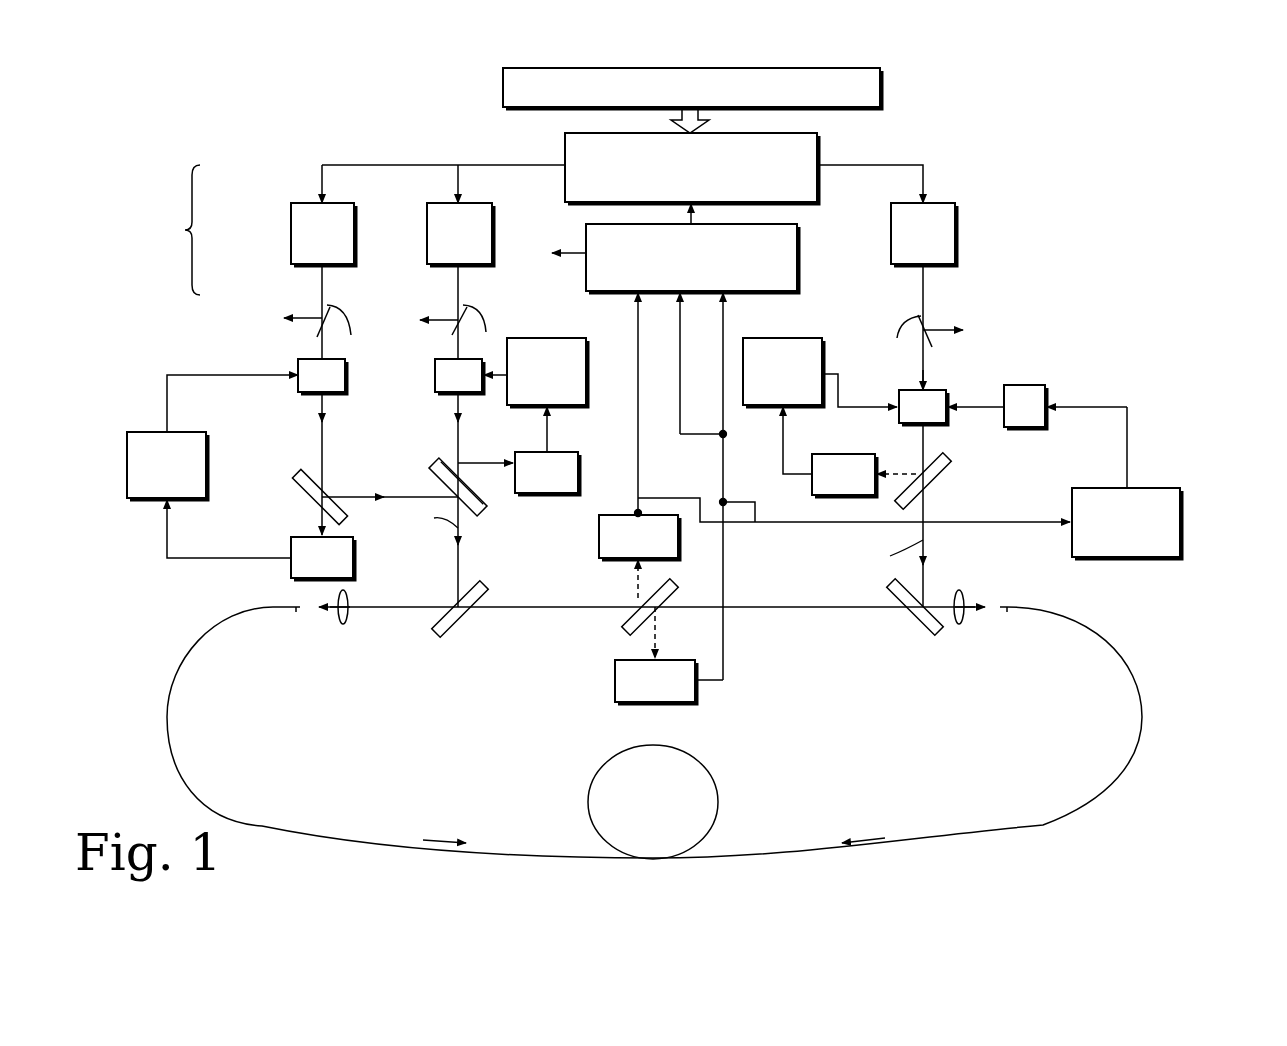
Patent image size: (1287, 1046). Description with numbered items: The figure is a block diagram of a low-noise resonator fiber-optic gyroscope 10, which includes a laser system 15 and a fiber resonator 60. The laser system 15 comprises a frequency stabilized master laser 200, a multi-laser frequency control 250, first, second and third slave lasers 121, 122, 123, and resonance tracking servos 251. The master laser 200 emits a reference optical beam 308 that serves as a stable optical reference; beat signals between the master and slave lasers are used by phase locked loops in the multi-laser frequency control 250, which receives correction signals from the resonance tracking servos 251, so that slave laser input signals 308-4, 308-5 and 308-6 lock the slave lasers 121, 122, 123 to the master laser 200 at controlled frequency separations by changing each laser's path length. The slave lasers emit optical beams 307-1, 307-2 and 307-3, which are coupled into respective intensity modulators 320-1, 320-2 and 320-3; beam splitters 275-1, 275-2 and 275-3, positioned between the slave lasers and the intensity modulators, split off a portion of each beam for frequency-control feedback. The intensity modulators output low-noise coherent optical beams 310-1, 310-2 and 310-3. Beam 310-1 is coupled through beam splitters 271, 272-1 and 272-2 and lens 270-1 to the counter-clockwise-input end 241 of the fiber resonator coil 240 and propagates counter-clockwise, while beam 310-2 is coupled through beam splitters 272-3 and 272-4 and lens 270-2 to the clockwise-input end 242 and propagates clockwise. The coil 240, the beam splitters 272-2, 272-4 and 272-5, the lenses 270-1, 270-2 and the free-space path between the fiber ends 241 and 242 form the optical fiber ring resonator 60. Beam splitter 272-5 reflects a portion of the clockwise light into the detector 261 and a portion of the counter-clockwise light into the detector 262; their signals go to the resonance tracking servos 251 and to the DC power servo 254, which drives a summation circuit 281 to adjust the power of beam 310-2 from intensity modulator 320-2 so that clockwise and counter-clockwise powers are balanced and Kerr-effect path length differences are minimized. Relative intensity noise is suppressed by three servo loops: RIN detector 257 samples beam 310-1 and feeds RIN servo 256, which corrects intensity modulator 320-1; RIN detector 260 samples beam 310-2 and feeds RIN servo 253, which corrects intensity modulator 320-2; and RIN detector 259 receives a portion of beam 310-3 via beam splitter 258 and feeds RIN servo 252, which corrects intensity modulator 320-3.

The low-noise resonator fiber-optic gyroscope 10 is at (1070, 158).
The laser system 15 is at (174, 230).
The fiber resonator 60 is at (698, 733).
The first slave laser 121 is at (291, 236).
The second slave laser 122 is at (957, 234).
The third slave laser 123 is at (427, 215).
The frequency stabilized master laser 200 is at (882, 94).
The fiber resonator coil 240 is at (718, 790).
The counter-clockwise-input end 241 is at (298, 620).
The clockwise-input end 242 is at (1007, 620).
The multi-laser frequency control 250 is at (565, 152).
The resonance tracking servos 251 is at (799, 242).
The RIN servo electronic system 252 is at (565, 338).
The RIN servo electronic system 253 is at (800, 338).
The DC power servo 254 is at (1145, 488).
The RIN servo electronic system 256 is at (145, 432).
The RIN detector 257 is at (355, 560).
The beam splitter 258 is at (468, 480).
The RIN detector 259 is at (545, 495).
The RIN detector 260 is at (812, 482).
The detector 261 is at (620, 515).
The detector 262 is at (615, 681).
The coupling lens 270-1 is at (345, 622).
The coupling lens 270-2 is at (960, 590).
The beam splitter 271 is at (310, 510).
The beam splitter 272-1 is at (433, 468).
The beam splitter 272-2 is at (445, 640).
The beam splitter 272-3 is at (938, 470).
The beam splitter 272-4 is at (918, 626).
The beam splitter 272-5 is at (622, 622).
The beam splitter 275-1 is at (306, 328).
The beam splitter 275-2 is at (948, 338).
The beam splitter 275-3 is at (442, 326).
The summation circuit 281 is at (1045, 390).
The first-frequency-modulated optical beam 307-1 is at (322, 285).
The second-frequency-modulated optical beam 307-2 is at (923, 296).
The third-frequency-modulated optical beam 307-3 is at (458, 286).
The reference optical beam 308 is at (703, 124).
The slave laser input signal 308-4 is at (322, 185).
The slave laser input signal 308-5 is at (923, 180).
The slave laser input signal 308-6 is at (458, 185).
The low-noise coherent optical beam 310-1 is at (322, 427).
The low-noise coherent optical beam 310-2 is at (923, 372).
The low-noise coherent optical beam 310-3 is at (458, 427).
The intensity modulator 320-1 is at (298, 370).
The intensity modulator 320-2 is at (946, 390).
The intensity modulator 320-3 is at (435, 380).